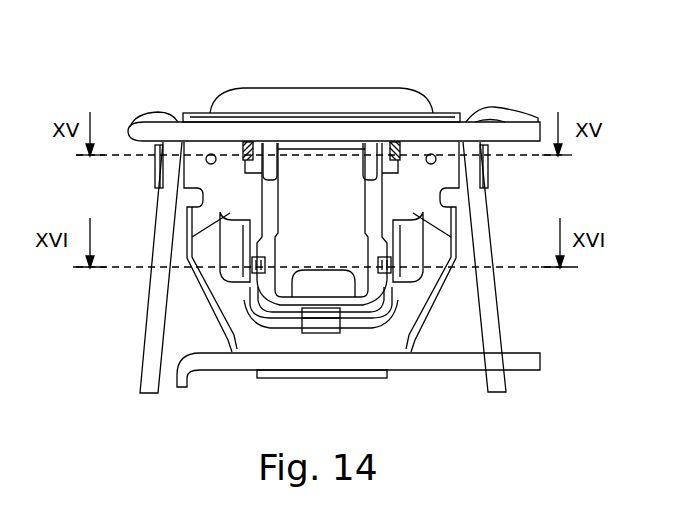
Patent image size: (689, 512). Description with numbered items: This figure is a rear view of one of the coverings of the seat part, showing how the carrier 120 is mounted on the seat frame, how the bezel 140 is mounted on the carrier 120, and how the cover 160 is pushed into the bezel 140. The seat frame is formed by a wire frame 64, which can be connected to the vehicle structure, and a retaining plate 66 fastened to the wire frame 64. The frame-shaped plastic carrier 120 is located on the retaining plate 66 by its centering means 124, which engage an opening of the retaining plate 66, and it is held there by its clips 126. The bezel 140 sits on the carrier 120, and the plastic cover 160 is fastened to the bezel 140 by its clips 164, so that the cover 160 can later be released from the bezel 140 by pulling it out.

The wire frame 64 is at (507, 113).
The retaining plate 66 is at (380, 340).
The carrier 120 is at (433, 253).
The centering means 124 is at (265, 328).
The clip 126 is at (400, 190).
The bezel 140 is at (250, 280).
The cover 160 is at (347, 182).
The clip 164 is at (270, 307).